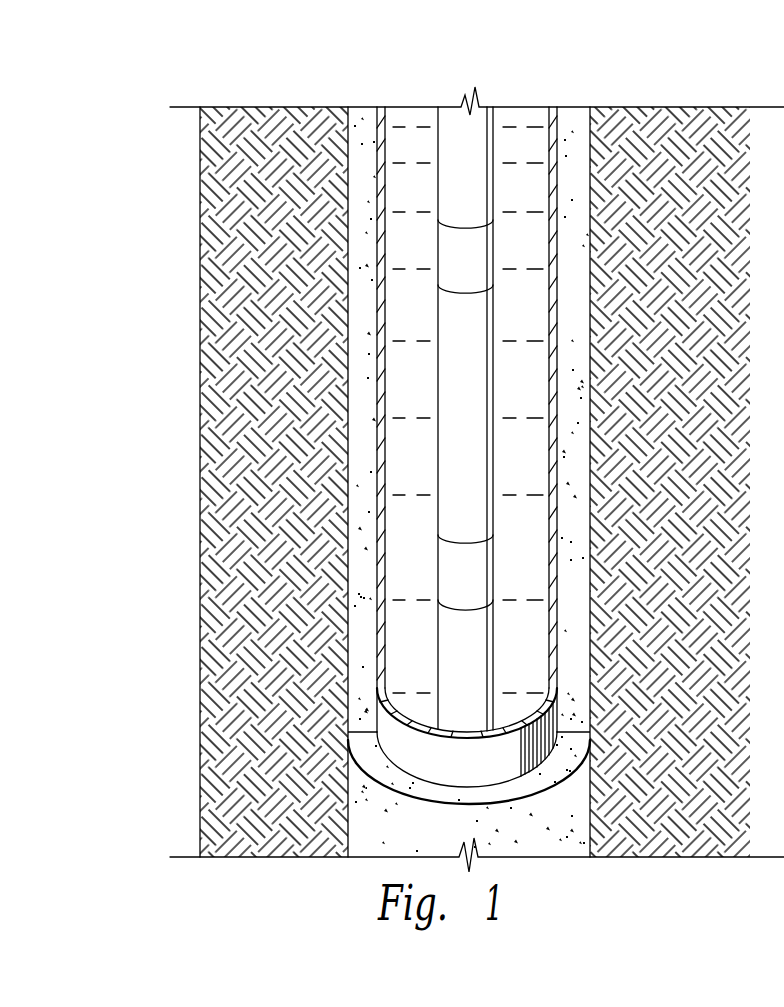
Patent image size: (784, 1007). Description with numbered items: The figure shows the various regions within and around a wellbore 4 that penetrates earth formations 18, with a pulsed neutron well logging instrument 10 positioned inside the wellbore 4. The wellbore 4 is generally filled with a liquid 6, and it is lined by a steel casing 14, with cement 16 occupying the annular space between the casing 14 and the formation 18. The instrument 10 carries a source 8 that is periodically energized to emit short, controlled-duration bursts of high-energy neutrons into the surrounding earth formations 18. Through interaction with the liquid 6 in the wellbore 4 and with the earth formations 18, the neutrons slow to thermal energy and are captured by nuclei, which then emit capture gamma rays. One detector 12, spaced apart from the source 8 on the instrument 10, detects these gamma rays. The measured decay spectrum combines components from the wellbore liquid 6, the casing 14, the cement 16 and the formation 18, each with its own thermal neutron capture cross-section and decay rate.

The wellbore 4 is at (412, 115).
The liquid 6 is at (531, 389).
The source 8 is at (450, 554).
The well logging instrument 10 is at (538, 99).
The detector 12 is at (450, 239).
The steel casing 14 is at (385, 397).
The cement 16 is at (545, 836).
The earth formations 18 is at (210, 394).